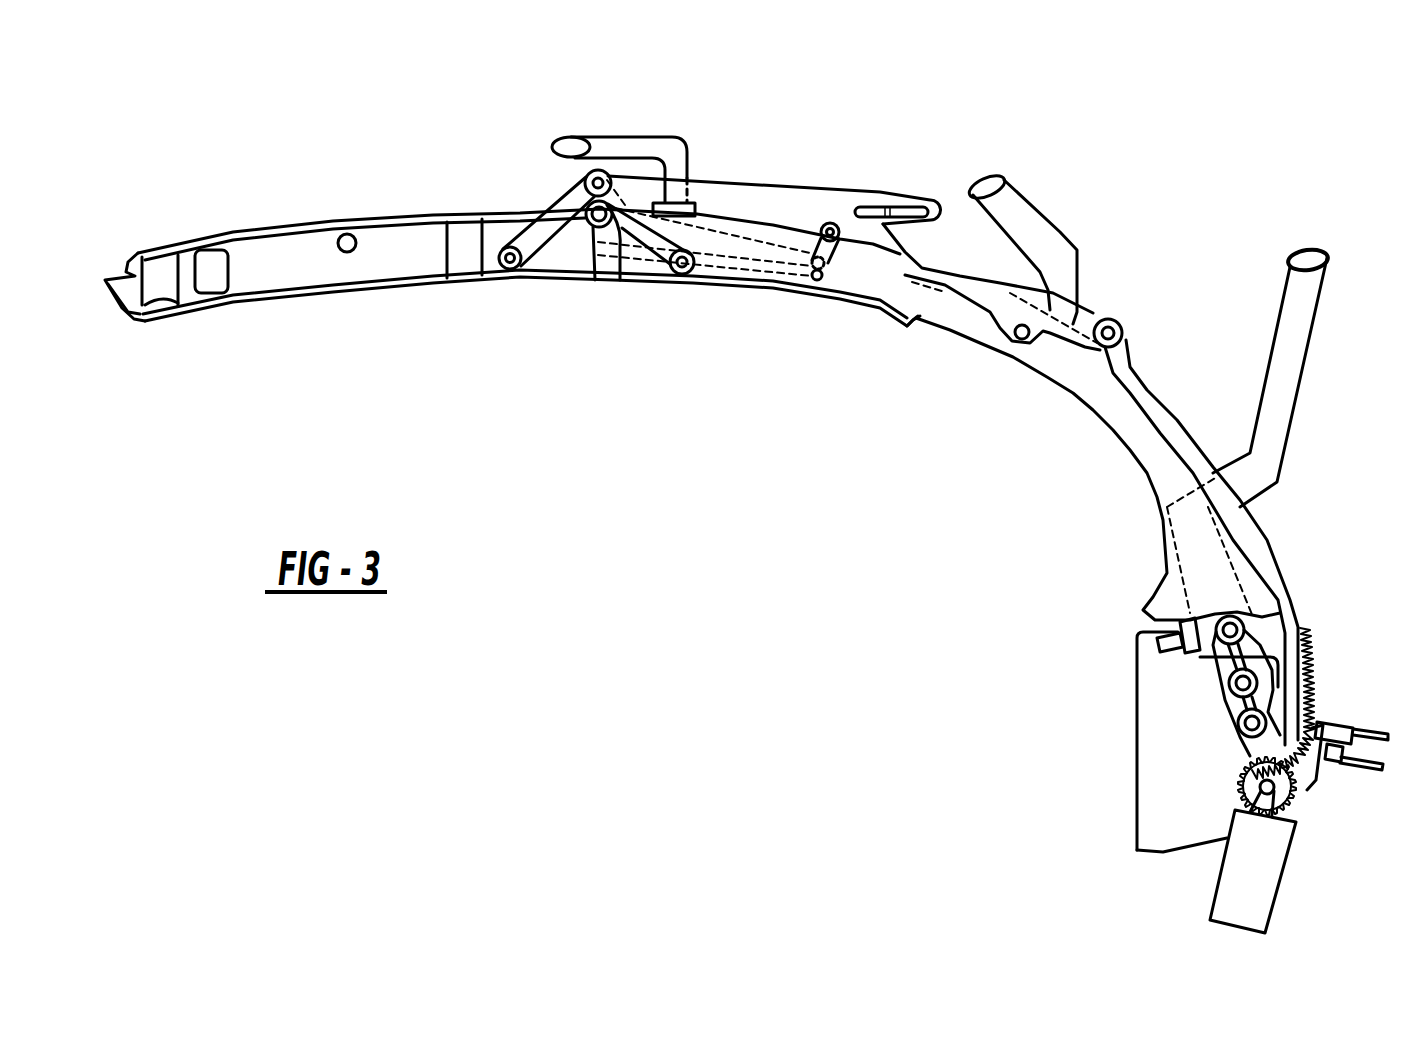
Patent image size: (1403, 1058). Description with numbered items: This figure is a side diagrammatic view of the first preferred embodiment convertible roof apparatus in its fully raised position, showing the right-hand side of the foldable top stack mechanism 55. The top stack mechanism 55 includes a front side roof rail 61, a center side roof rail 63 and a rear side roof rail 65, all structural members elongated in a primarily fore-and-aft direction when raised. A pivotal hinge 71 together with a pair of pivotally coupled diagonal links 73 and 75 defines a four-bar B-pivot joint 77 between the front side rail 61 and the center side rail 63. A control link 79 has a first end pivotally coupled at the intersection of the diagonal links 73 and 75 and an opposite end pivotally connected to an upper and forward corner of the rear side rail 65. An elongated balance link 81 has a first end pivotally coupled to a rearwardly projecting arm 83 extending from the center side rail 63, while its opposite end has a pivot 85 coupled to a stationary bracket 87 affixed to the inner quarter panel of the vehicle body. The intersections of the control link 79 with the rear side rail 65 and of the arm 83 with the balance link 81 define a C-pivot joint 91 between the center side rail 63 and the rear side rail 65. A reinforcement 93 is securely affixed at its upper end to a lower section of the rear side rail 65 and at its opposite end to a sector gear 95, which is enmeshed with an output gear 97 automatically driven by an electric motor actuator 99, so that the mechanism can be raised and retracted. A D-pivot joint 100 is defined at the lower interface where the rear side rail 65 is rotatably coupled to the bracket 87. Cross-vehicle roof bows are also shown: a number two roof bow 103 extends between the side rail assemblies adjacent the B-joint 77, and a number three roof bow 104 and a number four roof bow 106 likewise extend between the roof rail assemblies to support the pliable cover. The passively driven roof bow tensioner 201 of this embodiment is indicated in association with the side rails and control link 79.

The top stack mechanism 55 is at (457, 160).
The front side roof rail 61 is at (294, 253).
The center side roof rail 63 is at (782, 252).
The rear side roof rail 65 is at (1078, 382).
The pivotal hinge 71 is at (612, 262).
The diagonal link 73 is at (543, 238).
The diagonal link 75 is at (647, 238).
The four-bar B-pivot joint 77 is at (594, 284).
The control link 79 is at (718, 195).
The balance link 81 is at (1182, 440).
The rearwardly projecting arm 83 is at (1067, 313).
The pivot 85 is at (1307, 790).
The stationary bracket 87 is at (1153, 740).
The C-pivot joint 91 is at (923, 333).
The reinforcement 93 is at (1220, 668).
The sector gear 95 is at (1317, 673).
The output gear 97 is at (1238, 792).
The electric motor actuator 99 is at (1233, 888).
The D-pivot joint 100 is at (1148, 620).
The number two roof bow 103 is at (610, 135).
The number three roof bow 104 is at (1040, 208).
The number four roof bow 106 is at (1312, 348).
The roof bow tensioner 201 is at (703, 233).